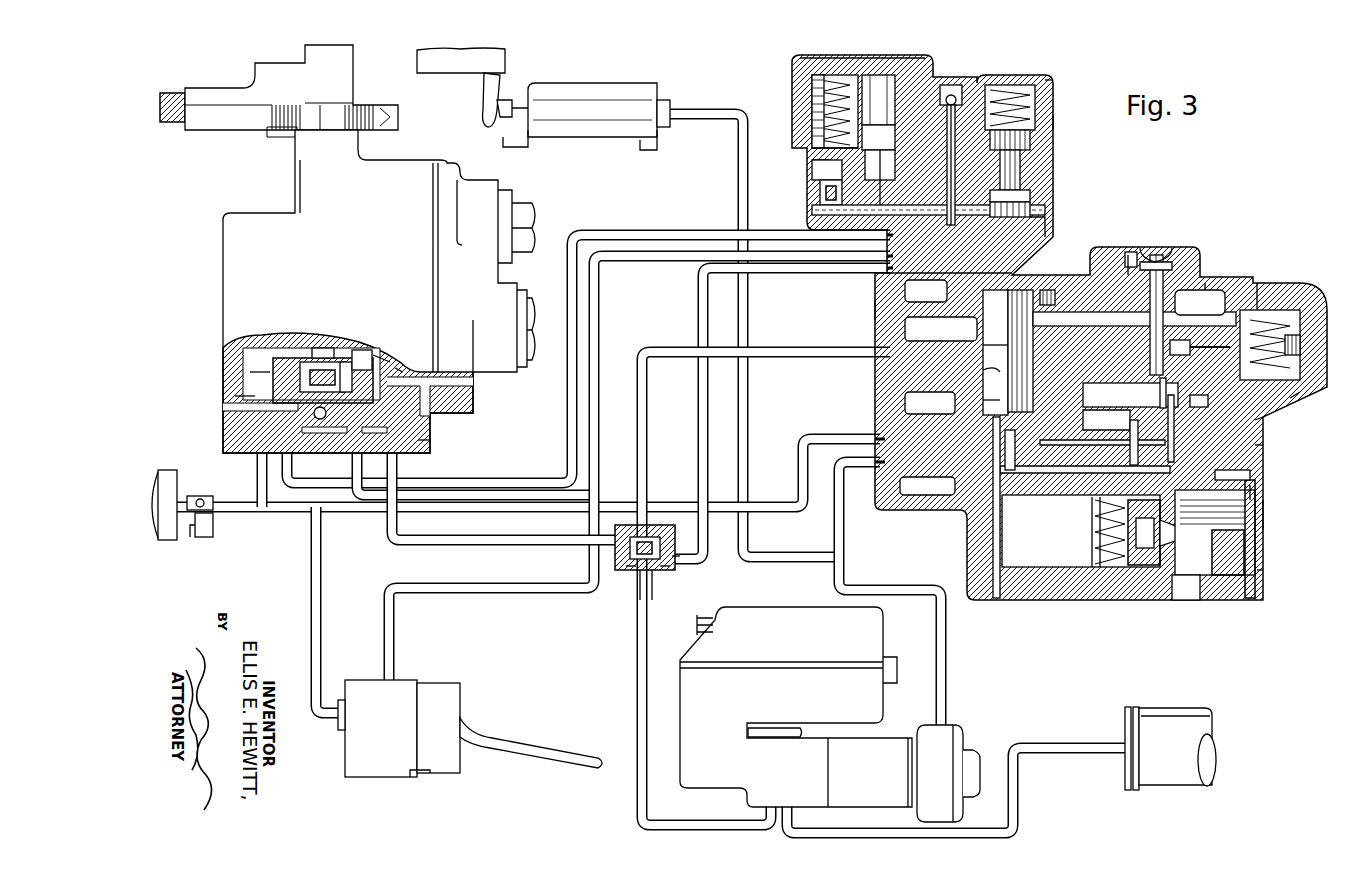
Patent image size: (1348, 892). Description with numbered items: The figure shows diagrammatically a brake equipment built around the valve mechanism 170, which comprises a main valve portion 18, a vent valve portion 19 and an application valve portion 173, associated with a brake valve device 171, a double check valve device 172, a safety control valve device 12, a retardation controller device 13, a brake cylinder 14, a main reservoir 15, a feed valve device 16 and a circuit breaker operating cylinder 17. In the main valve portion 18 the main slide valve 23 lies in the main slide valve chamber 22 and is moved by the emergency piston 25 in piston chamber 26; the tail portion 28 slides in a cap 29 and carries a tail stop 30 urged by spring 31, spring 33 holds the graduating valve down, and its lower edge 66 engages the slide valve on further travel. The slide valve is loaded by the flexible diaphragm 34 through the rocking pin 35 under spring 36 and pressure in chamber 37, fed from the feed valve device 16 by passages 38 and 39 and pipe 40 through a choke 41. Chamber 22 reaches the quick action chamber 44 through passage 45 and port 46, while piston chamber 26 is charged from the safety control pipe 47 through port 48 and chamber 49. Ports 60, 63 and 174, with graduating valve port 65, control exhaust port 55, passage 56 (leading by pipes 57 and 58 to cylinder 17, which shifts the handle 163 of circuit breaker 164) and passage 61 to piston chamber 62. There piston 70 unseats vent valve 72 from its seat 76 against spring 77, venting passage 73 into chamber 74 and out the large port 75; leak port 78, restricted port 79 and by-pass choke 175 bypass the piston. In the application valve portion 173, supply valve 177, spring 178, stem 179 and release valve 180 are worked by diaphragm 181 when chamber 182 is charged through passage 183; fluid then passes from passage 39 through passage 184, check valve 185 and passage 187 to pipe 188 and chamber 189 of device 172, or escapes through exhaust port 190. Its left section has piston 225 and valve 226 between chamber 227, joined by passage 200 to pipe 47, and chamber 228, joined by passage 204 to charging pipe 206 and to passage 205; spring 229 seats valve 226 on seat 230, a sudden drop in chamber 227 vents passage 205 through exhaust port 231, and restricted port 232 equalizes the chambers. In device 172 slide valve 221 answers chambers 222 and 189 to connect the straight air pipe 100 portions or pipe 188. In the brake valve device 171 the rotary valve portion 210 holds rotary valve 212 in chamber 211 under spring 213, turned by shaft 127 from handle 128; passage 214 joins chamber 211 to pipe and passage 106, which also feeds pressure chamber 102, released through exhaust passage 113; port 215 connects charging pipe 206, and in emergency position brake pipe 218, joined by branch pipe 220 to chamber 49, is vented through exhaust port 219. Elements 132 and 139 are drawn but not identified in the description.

The safety control valve device 12 is at (352, 680).
The retardation controller device 13 is at (744, 603).
The brake cylinder 14 is at (1170, 707).
The main reservoir 15 is at (167, 470).
The feed valve device 16 is at (200, 496).
The circuit breaker operating cylinder 17 is at (597, 83).
The main valve portion 18 is at (1258, 270).
The vent valve portion 19 is at (1276, 518).
The main slide valve chamber 22 is at (1089, 299).
The main slide valve 23 is at (1134, 353).
The emergency piston 25 is at (958, 400).
The piston chamber 26 is at (978, 372).
The tail portion 28 is at (1310, 312).
The cap 29 is at (1275, 290).
The tail stop 30 is at (1305, 338).
The spring 31 is at (1295, 395).
The spring 33 is at (1200, 302).
The flexible diaphragm 34 is at (1170, 255).
The rocking pin 35 is at (1215, 290).
The spring 36 is at (1165, 235).
The chamber 37 is at (1152, 232).
The passage 38 is at (1130, 247).
The passage 39 is at (1085, 454).
The pipe 40 is at (287, 512).
The choke 41 is at (1130, 232).
The quick action chamber 44 is at (905, 295).
The passage 45 is at (1050, 289).
The port 46 is at (1022, 289).
The safety control pipe 47 is at (600, 300).
The port 48 is at (958, 350).
The chamber 49 is at (905, 333).
The exhaust port 55 is at (1121, 428).
The passage 56 is at (1135, 448).
The pipe 57 is at (845, 532).
The pipe 58 is at (740, 166).
The port 60 is at (1206, 401).
The passage 61 is at (1262, 452).
The piston chamber 62 is at (1260, 530).
The port 63 is at (1172, 389).
The port 65 is at (1226, 303).
The lower edge 66 is at (1260, 418).
The piston 70 is at (1262, 575).
The vent valve 72 is at (1135, 590).
The passage 73 is at (975, 500).
The chamber 74 is at (1248, 592).
The large port 75 is at (1198, 592).
The seat 76 is at (1168, 590).
The spring 77 is at (1098, 590).
The leak port 78 is at (1262, 470).
The restricted port 79 is at (1260, 552).
The straight air pipe 100 is at (486, 543).
The pressure chamber 102 is at (400, 370).
The pipe and passage 106 is at (263, 449).
The exhaust passage 113 is at (428, 436).
The shaft 127 is at (312, 343).
The handle 128 is at (172, 92).
The brake valve handle 132 is at (515, 745).
The pipe 139 is at (313, 613).
The handle 163 is at (483, 100).
The circuit breaker 164 is at (417, 60).
The valve mechanism 170 is at (866, 316).
The brake valve device 171 is at (226, 212).
The double check valve device 172 is at (666, 572).
The application valve portion 173 is at (1060, 116).
The port 174 is at (1157, 359).
The by-pass choke 175 is at (1262, 493).
The supply valve 177 is at (1058, 97).
The spring 178 is at (1012, 88).
The stem 179 is at (1119, 140).
The release valve 180 is at (1047, 190).
The diaphragm 181 is at (1045, 207).
The chamber 182 is at (1045, 222).
The passage 183 is at (1031, 446).
The passage 184 is at (969, 165).
The spring-seated check valve 185 is at (957, 85).
The passage 187 is at (875, 283).
The pipe 188 is at (700, 300).
The chamber 189 is at (678, 560).
The exhaust port 190 is at (1040, 150).
The passage 200 is at (891, 100).
The passage 204 is at (891, 136).
The passage 205 is at (886, 177).
The charging pipe 206 is at (500, 480).
The rotary valve portion 210 is at (265, 333).
The chamber 211 is at (360, 360).
The rotary valve 212 is at (374, 360).
The spring 213 is at (331, 348).
The passage 214 is at (265, 372).
The port 215 is at (250, 396).
The brake pipe 218 is at (465, 492).
The exhaust port 219 is at (390, 362).
The branch pipe 220 is at (796, 350).
The slide valve 221 is at (655, 527).
The chamber 222 is at (636, 570).
The piston 225 is at (805, 84).
The valve 226 is at (812, 175).
The chamber 227 is at (795, 62).
The chamber 228 is at (805, 100).
The spring 229 is at (815, 140).
The seat 230 is at (830, 200).
The exhaust port 231 is at (820, 215).
The restricted port 232 is at (948, 94).